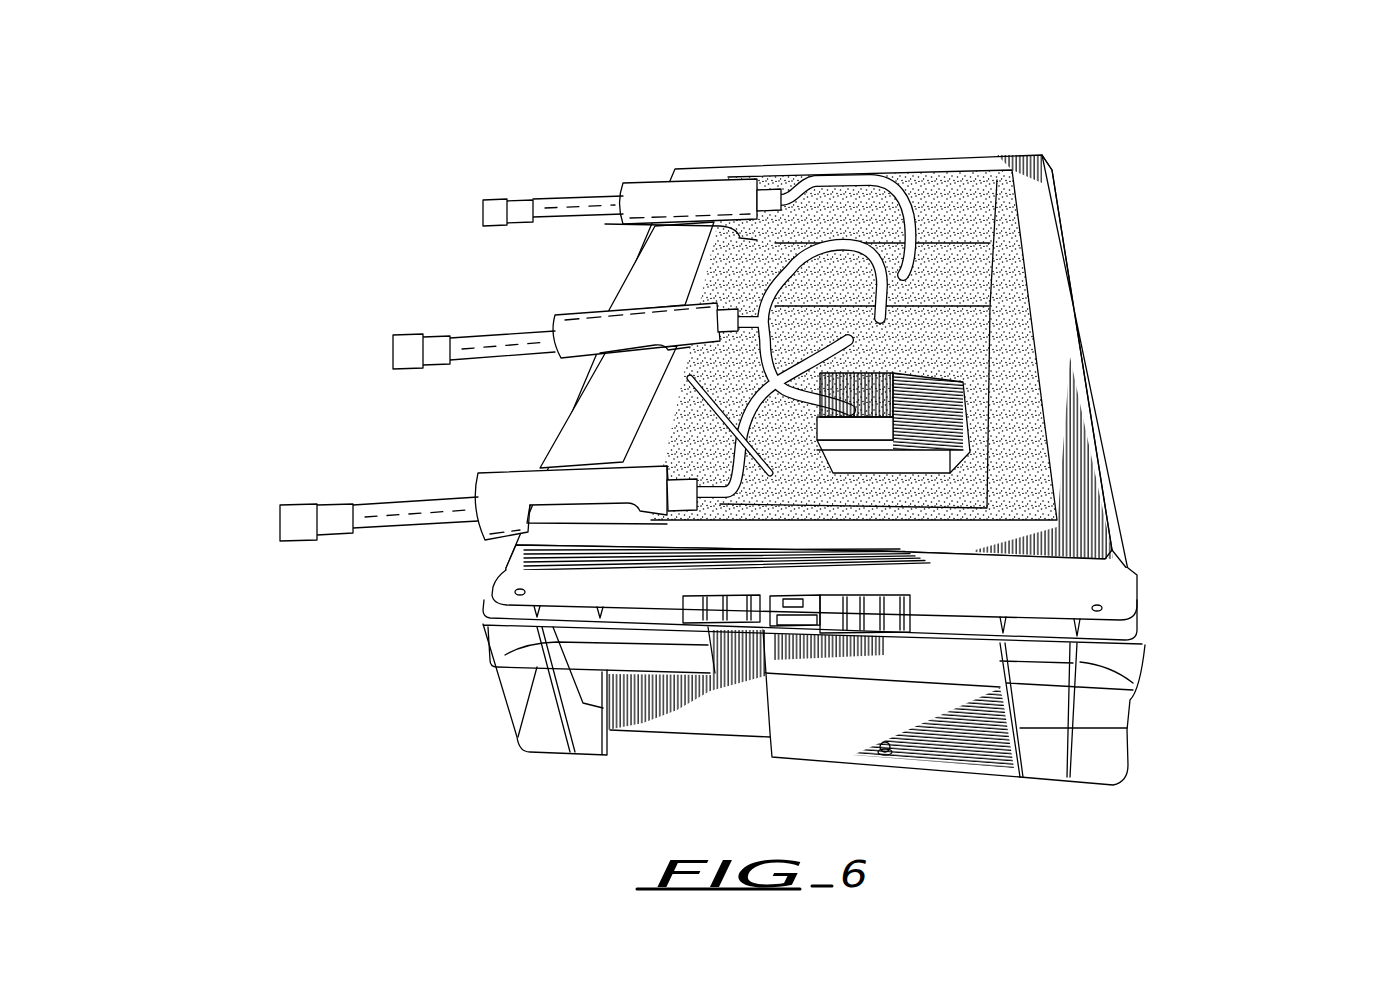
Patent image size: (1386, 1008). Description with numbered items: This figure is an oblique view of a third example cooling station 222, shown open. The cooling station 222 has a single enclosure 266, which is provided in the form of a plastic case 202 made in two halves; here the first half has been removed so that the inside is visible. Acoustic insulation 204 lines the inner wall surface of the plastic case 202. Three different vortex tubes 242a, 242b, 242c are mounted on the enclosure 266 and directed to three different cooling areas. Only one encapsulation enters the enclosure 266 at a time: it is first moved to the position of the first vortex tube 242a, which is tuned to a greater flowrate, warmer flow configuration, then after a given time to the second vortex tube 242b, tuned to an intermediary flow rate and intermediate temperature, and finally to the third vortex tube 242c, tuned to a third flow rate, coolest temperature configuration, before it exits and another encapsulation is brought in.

The cooling station 222 is at (1203, 132).
The acoustic insulation 204 is at (1070, 470).
The enclosure 266 is at (1127, 590).
The plastic case 202 is at (1120, 703).
The first vortex tube 242a is at (523, 493).
The second vortex tube 242b is at (582, 323).
The third vortex tube 242c is at (693, 193).